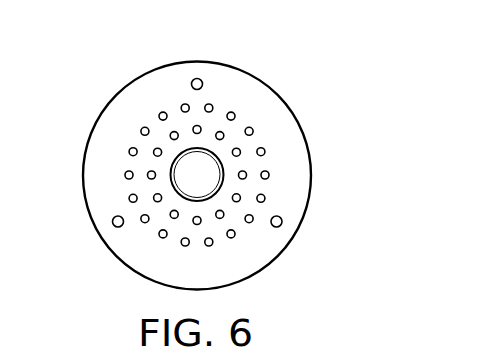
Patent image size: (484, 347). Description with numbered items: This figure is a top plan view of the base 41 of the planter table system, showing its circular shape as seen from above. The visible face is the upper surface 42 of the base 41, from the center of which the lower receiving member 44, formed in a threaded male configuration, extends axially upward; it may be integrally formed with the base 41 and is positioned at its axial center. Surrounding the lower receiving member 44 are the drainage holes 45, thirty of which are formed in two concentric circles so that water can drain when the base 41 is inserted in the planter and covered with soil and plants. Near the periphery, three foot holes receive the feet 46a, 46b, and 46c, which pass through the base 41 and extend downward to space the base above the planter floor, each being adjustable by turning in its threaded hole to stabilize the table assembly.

The base 41 is at (330, 99).
The upper surface 42 is at (302, 176).
The lower receiving member 44 is at (221, 159).
The drainage holes 45 is at (130, 152).
The foot 46a is at (196, 78).
The foot 46b is at (112, 224).
The foot 46c is at (283, 224).